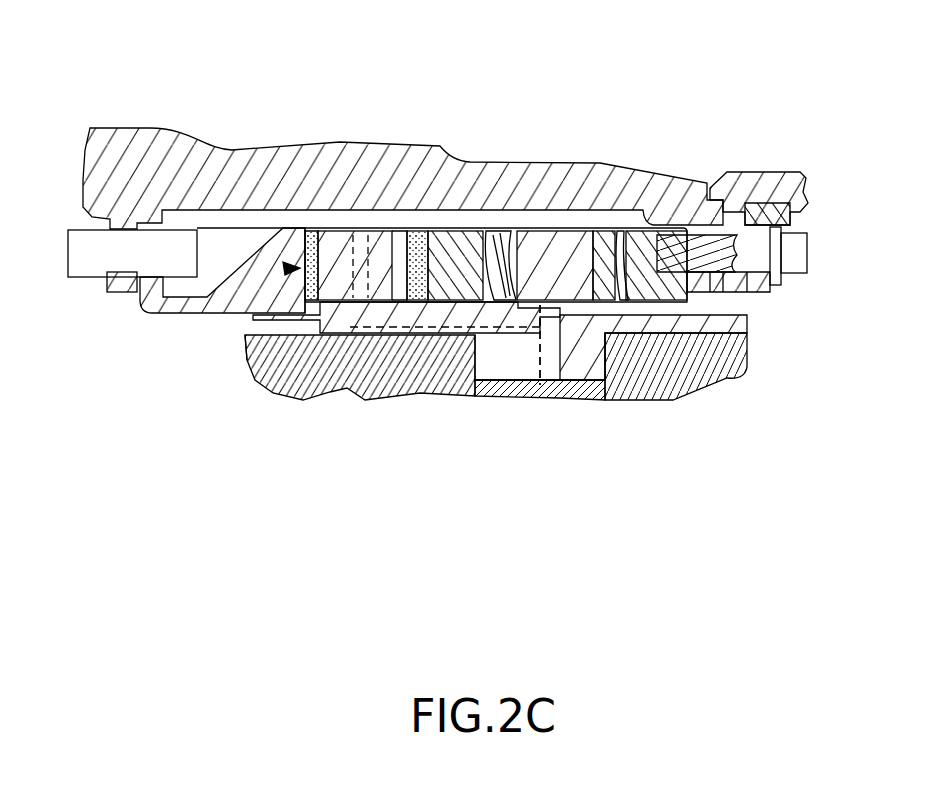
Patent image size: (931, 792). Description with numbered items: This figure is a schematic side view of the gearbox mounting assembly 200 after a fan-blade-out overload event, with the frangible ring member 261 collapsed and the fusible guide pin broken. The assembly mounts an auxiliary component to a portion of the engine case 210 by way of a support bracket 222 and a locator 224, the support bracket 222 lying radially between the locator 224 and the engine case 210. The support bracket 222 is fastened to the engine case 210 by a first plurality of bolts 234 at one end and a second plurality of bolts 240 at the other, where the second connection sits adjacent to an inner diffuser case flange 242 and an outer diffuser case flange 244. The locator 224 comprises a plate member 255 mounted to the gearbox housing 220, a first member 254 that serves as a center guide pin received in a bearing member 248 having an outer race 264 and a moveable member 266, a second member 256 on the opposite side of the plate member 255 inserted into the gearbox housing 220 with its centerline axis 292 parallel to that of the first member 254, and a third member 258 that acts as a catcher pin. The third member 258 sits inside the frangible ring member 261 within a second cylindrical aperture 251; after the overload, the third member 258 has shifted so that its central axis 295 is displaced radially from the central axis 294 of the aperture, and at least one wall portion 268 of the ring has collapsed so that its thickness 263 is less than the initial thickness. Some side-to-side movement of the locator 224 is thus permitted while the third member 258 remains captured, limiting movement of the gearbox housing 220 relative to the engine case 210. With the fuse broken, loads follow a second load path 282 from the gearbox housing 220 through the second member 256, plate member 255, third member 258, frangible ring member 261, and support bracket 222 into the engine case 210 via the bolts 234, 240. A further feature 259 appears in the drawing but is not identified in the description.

The gearbox mounting assembly 200 is at (86, 72).
The engine case 210 is at (416, 138).
The gearbox housing 220 is at (703, 373).
The support bracket 222 is at (228, 312).
The locator 224 is at (573, 353).
The first plurality of bolts 234 is at (83, 278).
The second plurality of bolts 240 is at (797, 278).
The inner diffuser case flange 242 is at (740, 190).
The outer diffuser case flange 244 is at (783, 212).
The bearing member 248 is at (505, 231).
The second cylindrical aperture 251 is at (420, 228).
The first member 254 is at (580, 233).
The plate member 255 is at (265, 345).
The second member 256 is at (507, 381).
The third member 258 is at (348, 235).
The wedge indicator 259 is at (328, 263).
The frangible ring member 261 is at (313, 240).
The thickness 263 is at (312, 336).
The outer race 264 is at (483, 296).
The moveable member 266 is at (507, 295).
The wall portion 268 is at (310, 280).
The second load path 282 is at (535, 341).
The centerline axis 292 is at (542, 381).
The central axis 294 is at (378, 235).
The central axis 295 is at (362, 228).